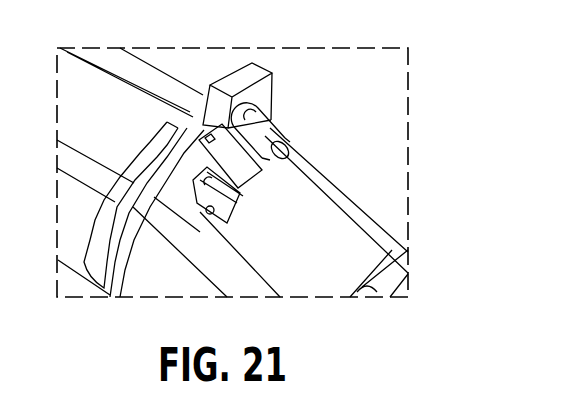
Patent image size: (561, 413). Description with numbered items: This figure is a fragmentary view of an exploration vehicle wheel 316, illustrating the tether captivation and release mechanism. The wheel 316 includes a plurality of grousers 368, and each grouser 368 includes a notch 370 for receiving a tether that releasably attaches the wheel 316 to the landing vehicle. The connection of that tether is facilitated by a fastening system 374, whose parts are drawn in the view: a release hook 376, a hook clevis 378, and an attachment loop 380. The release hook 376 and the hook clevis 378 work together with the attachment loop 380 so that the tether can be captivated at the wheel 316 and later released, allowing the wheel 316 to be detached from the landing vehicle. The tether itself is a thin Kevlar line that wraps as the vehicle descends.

The wheel 316 is at (353, 243).
The grouser 368 is at (238, 78).
The notch 370 is at (207, 112).
The fastening system 374 is at (200, 230).
The release hook 376 is at (231, 158).
The hook clevis 378 is at (272, 147).
The attachment loop 380 is at (207, 88).